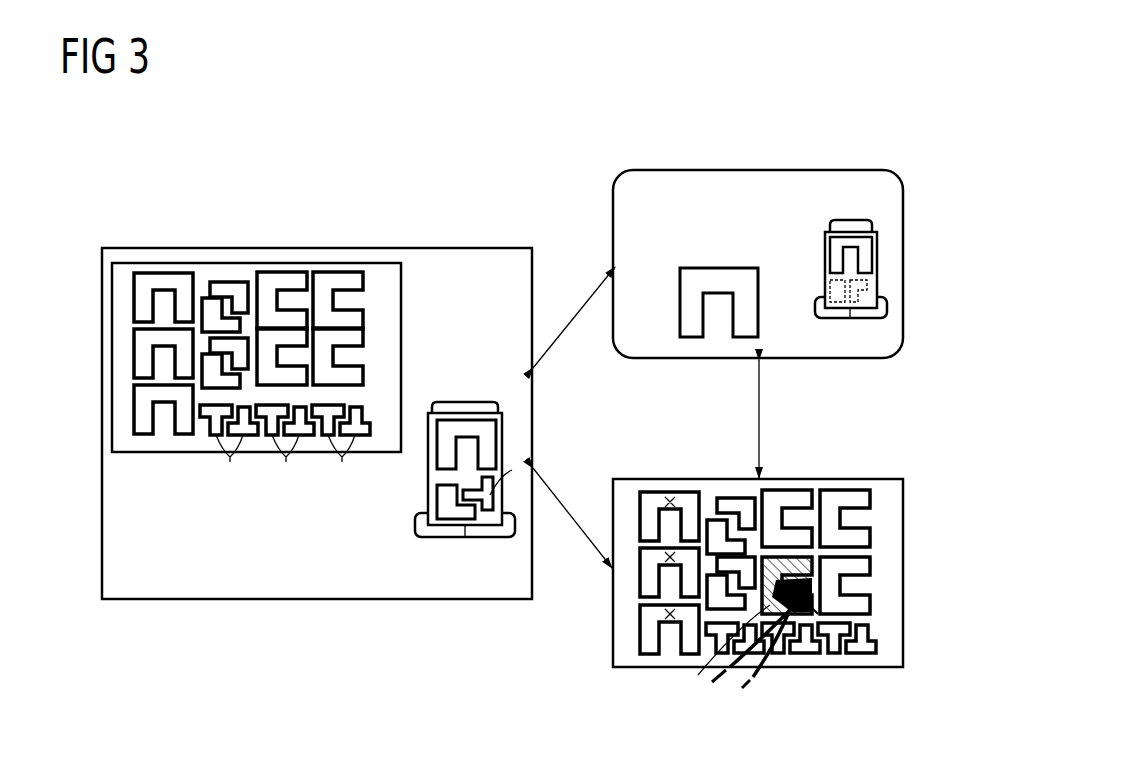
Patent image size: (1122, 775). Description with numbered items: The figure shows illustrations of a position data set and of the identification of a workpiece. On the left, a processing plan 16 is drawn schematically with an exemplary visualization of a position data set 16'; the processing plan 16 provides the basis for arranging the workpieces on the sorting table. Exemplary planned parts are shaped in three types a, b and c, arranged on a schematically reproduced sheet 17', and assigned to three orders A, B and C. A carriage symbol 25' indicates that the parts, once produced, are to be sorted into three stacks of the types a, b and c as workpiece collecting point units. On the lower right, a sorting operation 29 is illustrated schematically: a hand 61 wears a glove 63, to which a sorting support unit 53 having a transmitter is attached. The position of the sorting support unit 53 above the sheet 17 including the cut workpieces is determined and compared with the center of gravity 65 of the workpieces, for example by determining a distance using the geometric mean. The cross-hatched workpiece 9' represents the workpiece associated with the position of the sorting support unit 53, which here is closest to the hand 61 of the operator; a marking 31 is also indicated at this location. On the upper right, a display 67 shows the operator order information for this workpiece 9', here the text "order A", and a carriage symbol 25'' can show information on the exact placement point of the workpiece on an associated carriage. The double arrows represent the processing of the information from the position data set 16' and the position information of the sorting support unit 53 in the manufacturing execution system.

The processing plan 16 is at (317, 393).
The position data set 16' is at (126, 444).
The sheet 17 is at (779, 565).
The schematically reproduced sheet 17' is at (263, 383).
The carriage symbol 25' is at (443, 469).
The carriage symbol 25'' is at (863, 220).
The sorting operation 29 is at (790, 458).
The marking 31 is at (807, 607).
The sorting support unit 53 is at (727, 655).
The hand 61 is at (818, 616).
The glove 63 is at (790, 613).
The center of gravity 65 is at (768, 580).
The display 67 is at (782, 155).
The workpiece 9' is at (852, 579).